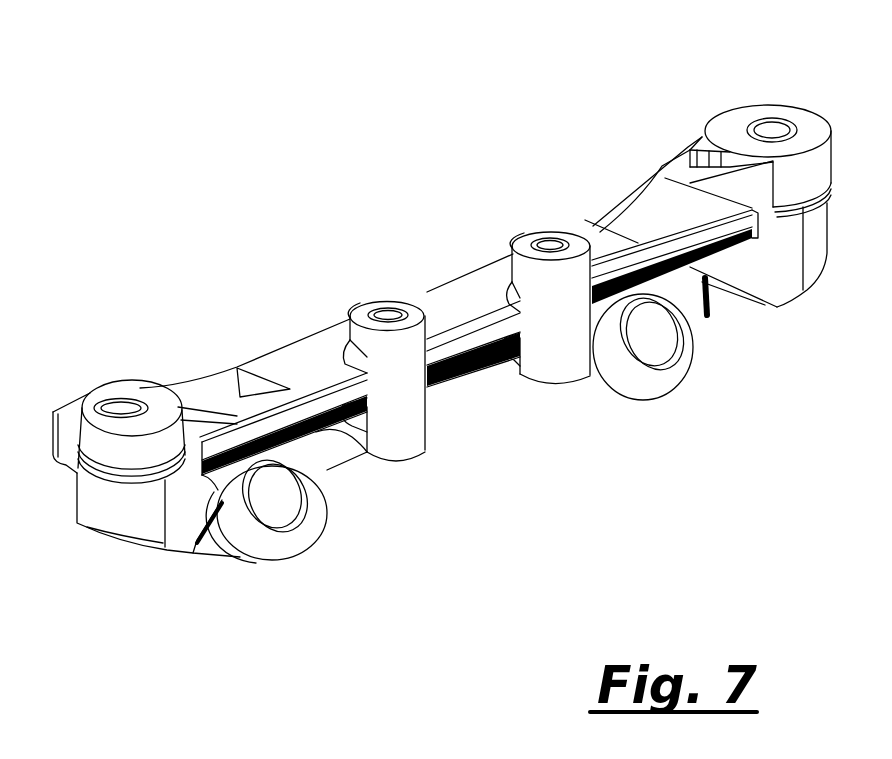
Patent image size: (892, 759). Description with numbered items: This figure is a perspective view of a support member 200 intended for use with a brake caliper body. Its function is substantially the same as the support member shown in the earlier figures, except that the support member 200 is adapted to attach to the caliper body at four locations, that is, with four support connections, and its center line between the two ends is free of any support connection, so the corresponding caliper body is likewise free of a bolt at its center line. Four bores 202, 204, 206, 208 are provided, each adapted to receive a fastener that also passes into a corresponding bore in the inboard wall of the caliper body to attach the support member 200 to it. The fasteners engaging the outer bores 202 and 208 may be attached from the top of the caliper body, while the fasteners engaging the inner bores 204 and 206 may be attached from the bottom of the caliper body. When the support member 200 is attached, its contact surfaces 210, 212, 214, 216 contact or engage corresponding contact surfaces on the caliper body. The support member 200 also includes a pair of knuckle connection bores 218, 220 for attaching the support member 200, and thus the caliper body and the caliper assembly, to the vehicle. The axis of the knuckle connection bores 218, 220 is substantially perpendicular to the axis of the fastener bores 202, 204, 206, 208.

The support member 200 is at (212, 243).
The bore 202 is at (103, 385).
The bore 204 is at (347, 326).
The bore 206 is at (529, 270).
The bore 208 is at (739, 119).
The contact surface 210 is at (127, 390).
The contact surface 212 is at (360, 318).
The contact surface 214 is at (525, 248).
The contact surface 216 is at (732, 135).
The knuckle connection bore 218 is at (277, 497).
The knuckle connection bore 220 is at (648, 337).